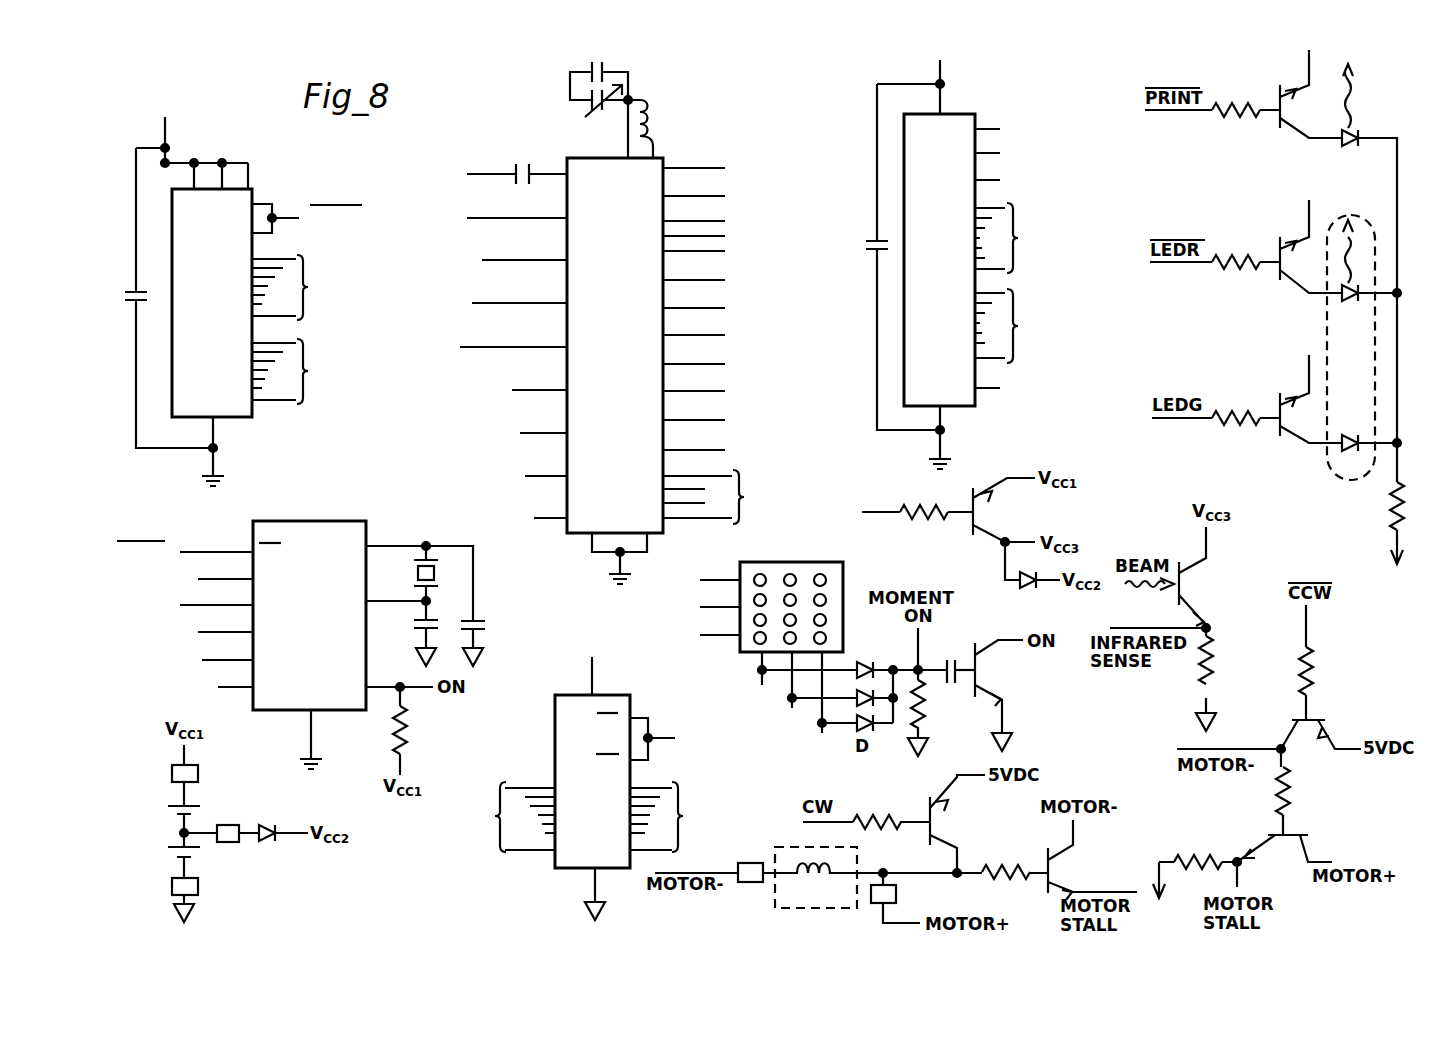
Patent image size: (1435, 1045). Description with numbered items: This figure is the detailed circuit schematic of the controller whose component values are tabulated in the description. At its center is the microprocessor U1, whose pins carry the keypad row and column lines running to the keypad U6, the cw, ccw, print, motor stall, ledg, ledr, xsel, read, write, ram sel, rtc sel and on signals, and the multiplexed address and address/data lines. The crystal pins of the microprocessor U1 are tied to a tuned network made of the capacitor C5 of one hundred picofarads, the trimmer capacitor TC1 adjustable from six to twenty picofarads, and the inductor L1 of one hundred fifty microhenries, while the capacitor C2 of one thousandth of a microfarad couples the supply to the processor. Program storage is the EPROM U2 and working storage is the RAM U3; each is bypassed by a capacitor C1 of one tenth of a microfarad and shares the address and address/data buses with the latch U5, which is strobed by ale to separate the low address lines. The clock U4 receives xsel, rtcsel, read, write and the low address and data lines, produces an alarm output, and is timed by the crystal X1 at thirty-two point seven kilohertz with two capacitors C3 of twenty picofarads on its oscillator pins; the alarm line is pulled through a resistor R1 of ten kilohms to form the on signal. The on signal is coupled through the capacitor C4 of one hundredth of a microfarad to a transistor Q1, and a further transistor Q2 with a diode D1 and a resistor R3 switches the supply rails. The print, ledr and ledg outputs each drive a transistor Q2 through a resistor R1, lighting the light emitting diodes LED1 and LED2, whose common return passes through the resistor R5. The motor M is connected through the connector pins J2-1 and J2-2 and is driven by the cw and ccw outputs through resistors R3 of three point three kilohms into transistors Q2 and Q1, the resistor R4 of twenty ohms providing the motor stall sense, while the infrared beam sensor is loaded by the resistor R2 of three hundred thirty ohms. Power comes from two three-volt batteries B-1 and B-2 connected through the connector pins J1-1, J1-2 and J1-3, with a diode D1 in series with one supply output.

The microprocessor U1 is at (643, 336).
The EPROM U2 is at (272, 288).
The RAM U3 is at (994, 260).
The clock U4 is at (295, 645).
The latch U5 is at (581, 765).
The keypad matrix U6 is at (766, 646).
The capacitor C1 is at (496, 270).
The capacitor C2 is at (524, 164).
The capacitor C3 is at (451, 624).
The capacitor C4 is at (950, 685).
The capacitor C5 is at (584, 77).
The trimmer capacitor TC1 is at (581, 104).
The inductor L1 is at (659, 129).
The crystal X1 is at (410, 573).
The resistor R1 is at (826, 428).
The resistor R2 is at (1222, 661).
The resistor R3 is at (1100, 692).
The resistor R4 is at (1198, 851).
The resistor R5 is at (1382, 523).
The transistor Q1 is at (1153, 770).
The transistor Q2 is at (1145, 461).
The diode D1 is at (651, 718).
The light emitting diode LED1 is at (1347, 120).
The light emitting diode LED2 is at (1352, 347).
The connector J1-1 is at (207, 887).
The connector J1-2 is at (231, 822).
The connector J1-3 is at (207, 775).
The connector J2-1 is at (742, 882).
The connector J2-2 is at (905, 898).
The battery B-1 is at (160, 817).
The battery B-2 is at (160, 860).
The motor M is at (816, 877).